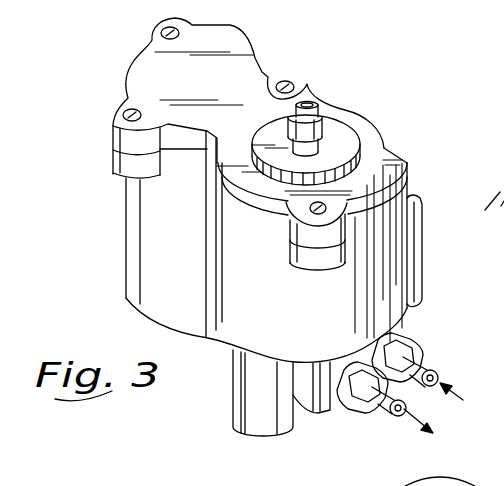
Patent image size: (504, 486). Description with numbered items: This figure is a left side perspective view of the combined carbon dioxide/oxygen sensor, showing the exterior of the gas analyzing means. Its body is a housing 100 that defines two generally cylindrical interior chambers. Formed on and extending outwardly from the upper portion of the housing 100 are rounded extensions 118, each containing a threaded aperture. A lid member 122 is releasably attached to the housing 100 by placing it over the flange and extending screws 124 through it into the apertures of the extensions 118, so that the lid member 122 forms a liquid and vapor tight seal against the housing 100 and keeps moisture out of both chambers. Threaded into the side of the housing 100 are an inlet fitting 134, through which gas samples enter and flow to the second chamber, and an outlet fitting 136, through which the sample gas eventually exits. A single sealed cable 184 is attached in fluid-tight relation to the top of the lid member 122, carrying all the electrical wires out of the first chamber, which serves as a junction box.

The housing 100 is at (413, 162).
The rounded extensions 118 is at (132, 168).
The lid member 122 is at (160, 70).
The screws 124 is at (130, 112).
The inlet fitting 134 is at (410, 348).
The outlet fitting 136 is at (363, 407).
The sealed cable 184 is at (322, 121).